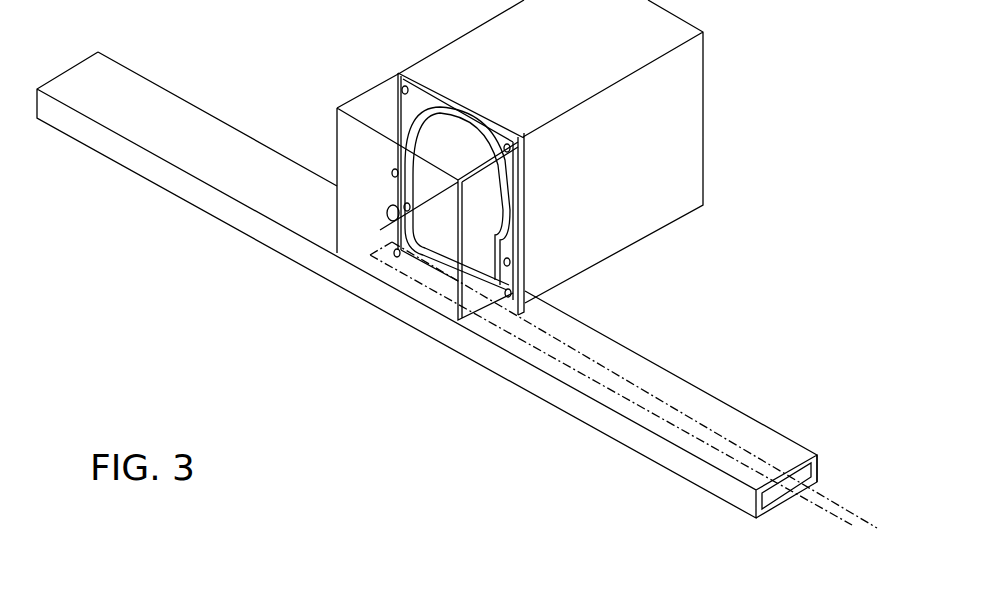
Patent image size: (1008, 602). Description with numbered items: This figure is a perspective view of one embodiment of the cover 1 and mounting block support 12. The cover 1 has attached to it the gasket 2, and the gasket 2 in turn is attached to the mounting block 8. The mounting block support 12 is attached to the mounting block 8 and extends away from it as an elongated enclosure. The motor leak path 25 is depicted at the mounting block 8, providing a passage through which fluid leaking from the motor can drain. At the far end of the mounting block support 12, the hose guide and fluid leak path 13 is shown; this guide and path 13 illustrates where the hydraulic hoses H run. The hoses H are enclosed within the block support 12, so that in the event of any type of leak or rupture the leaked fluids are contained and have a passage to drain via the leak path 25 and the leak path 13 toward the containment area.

The cover 1 is at (705, 115).
The gasket 2 is at (400, 72).
The mounting block 8 is at (337, 103).
The mounting block support 12 is at (660, 366).
The hose guide and fluid leak path 13 is at (813, 485).
The motor leak path 25 is at (440, 260).
The hydraulic hoses H is at (833, 517).